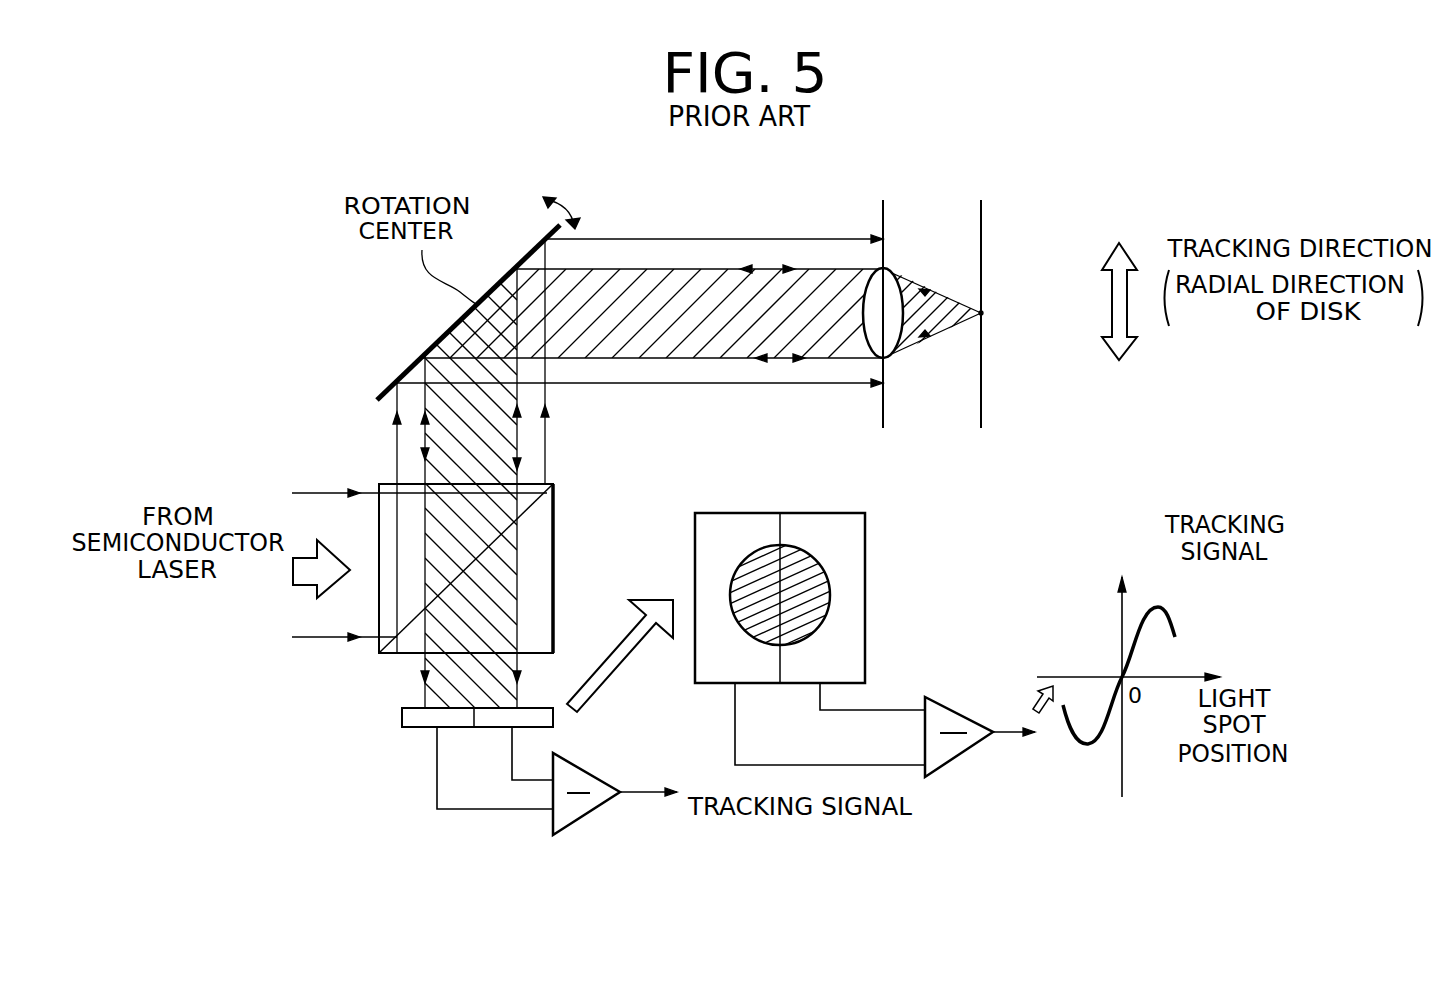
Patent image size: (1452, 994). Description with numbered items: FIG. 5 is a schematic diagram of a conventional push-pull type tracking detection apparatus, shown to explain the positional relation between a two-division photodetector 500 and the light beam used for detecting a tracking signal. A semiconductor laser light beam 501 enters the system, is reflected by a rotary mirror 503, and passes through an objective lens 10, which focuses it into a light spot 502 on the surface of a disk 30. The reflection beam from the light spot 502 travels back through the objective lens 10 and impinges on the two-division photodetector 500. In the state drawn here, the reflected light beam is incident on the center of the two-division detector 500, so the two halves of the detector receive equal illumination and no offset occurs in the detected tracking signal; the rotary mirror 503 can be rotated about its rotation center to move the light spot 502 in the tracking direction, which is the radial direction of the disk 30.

The objective lens 10 is at (893, 327).
The disk 30 is at (981, 407).
The two-division photodetector 500 is at (422, 717).
The semiconductor laser light beam 501 is at (320, 612).
The light spot 502 is at (980, 311).
The rotary mirror 503 is at (403, 372).